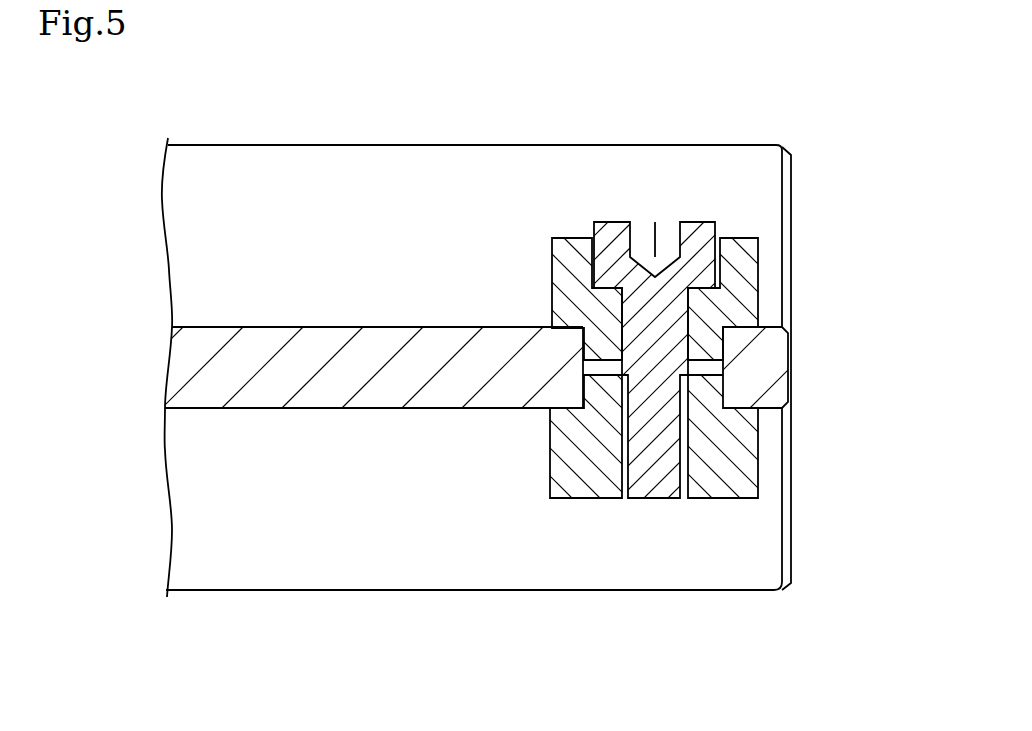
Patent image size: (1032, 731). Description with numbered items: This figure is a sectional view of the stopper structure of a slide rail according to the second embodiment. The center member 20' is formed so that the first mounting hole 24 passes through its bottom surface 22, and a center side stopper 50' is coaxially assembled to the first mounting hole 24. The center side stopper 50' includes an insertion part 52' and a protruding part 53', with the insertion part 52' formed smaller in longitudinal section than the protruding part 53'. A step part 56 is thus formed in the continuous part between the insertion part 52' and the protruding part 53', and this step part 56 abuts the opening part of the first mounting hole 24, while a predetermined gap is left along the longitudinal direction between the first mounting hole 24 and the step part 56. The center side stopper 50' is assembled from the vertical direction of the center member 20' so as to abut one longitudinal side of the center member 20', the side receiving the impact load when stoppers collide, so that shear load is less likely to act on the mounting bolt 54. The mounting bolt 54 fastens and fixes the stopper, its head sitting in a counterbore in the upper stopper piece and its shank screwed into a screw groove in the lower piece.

The center member 20' is at (525, 367).
The bottom surface 22 is at (214, 327).
The first mounting hole 24 is at (585, 377).
The center side stopper 50' is at (616, 360).
The insertion part 52' is at (616, 360).
The protruding part 53' is at (616, 360).
The mounting bolt 54 is at (691, 235).
The step part 56 is at (578, 329).